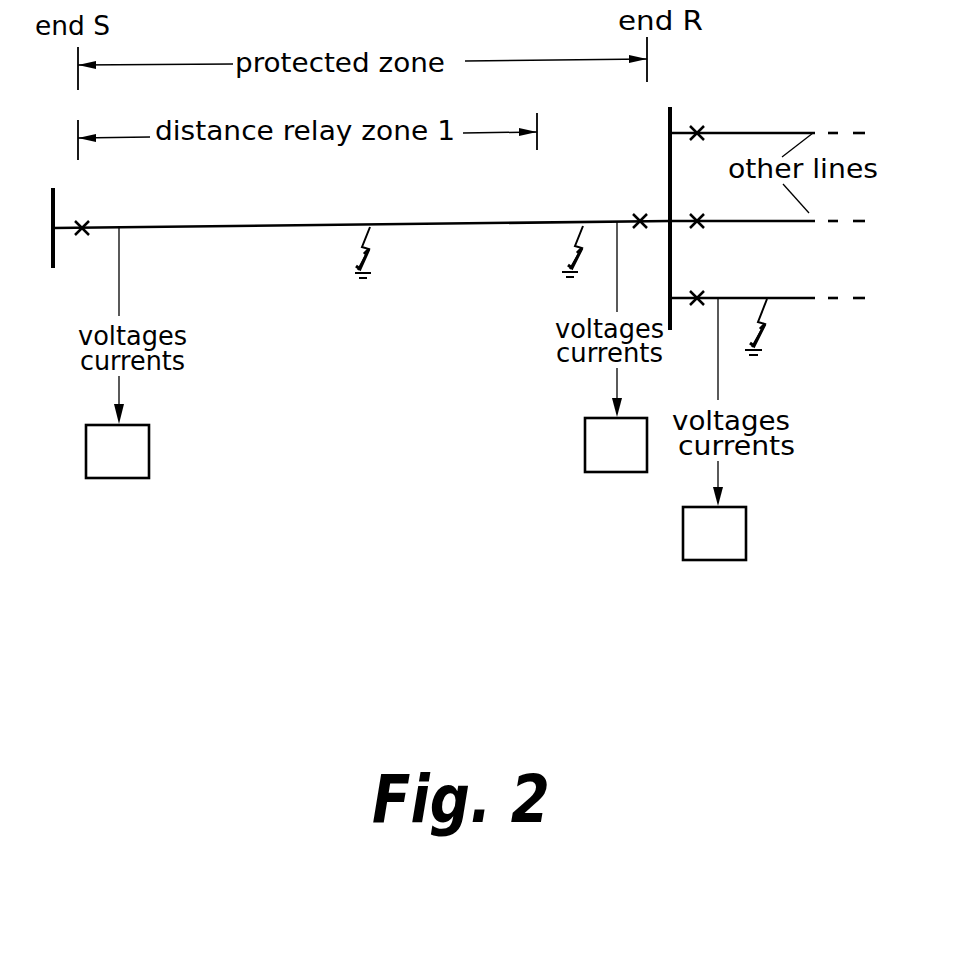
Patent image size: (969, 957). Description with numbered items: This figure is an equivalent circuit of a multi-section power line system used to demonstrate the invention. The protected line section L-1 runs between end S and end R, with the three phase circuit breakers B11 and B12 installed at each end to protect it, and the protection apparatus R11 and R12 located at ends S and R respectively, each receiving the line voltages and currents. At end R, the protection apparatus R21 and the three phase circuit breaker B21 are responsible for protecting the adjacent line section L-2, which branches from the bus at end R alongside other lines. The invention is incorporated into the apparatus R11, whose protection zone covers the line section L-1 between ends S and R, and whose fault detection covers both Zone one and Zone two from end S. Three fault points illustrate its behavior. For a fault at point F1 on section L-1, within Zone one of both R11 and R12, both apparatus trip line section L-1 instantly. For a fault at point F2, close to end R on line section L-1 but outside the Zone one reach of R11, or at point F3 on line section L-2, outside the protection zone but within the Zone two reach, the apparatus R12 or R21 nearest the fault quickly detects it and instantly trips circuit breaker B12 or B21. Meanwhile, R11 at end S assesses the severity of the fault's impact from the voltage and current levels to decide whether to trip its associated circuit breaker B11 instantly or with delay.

The three phase circuit breaker B11 is at (86, 206).
The three phase circuit breaker B12 is at (634, 200).
The three phase circuit breaker B21 is at (700, 277).
The protected line section L-1 is at (361, 202).
The line section L-2 is at (767, 274).
The fault point F1 is at (357, 269).
The fault point F2 is at (568, 268).
The fault point F3 is at (756, 348).
The protection apparatus R11 is at (117, 451).
The protection apparatus R12 is at (616, 445).
The protection apparatus R21 is at (714, 533).